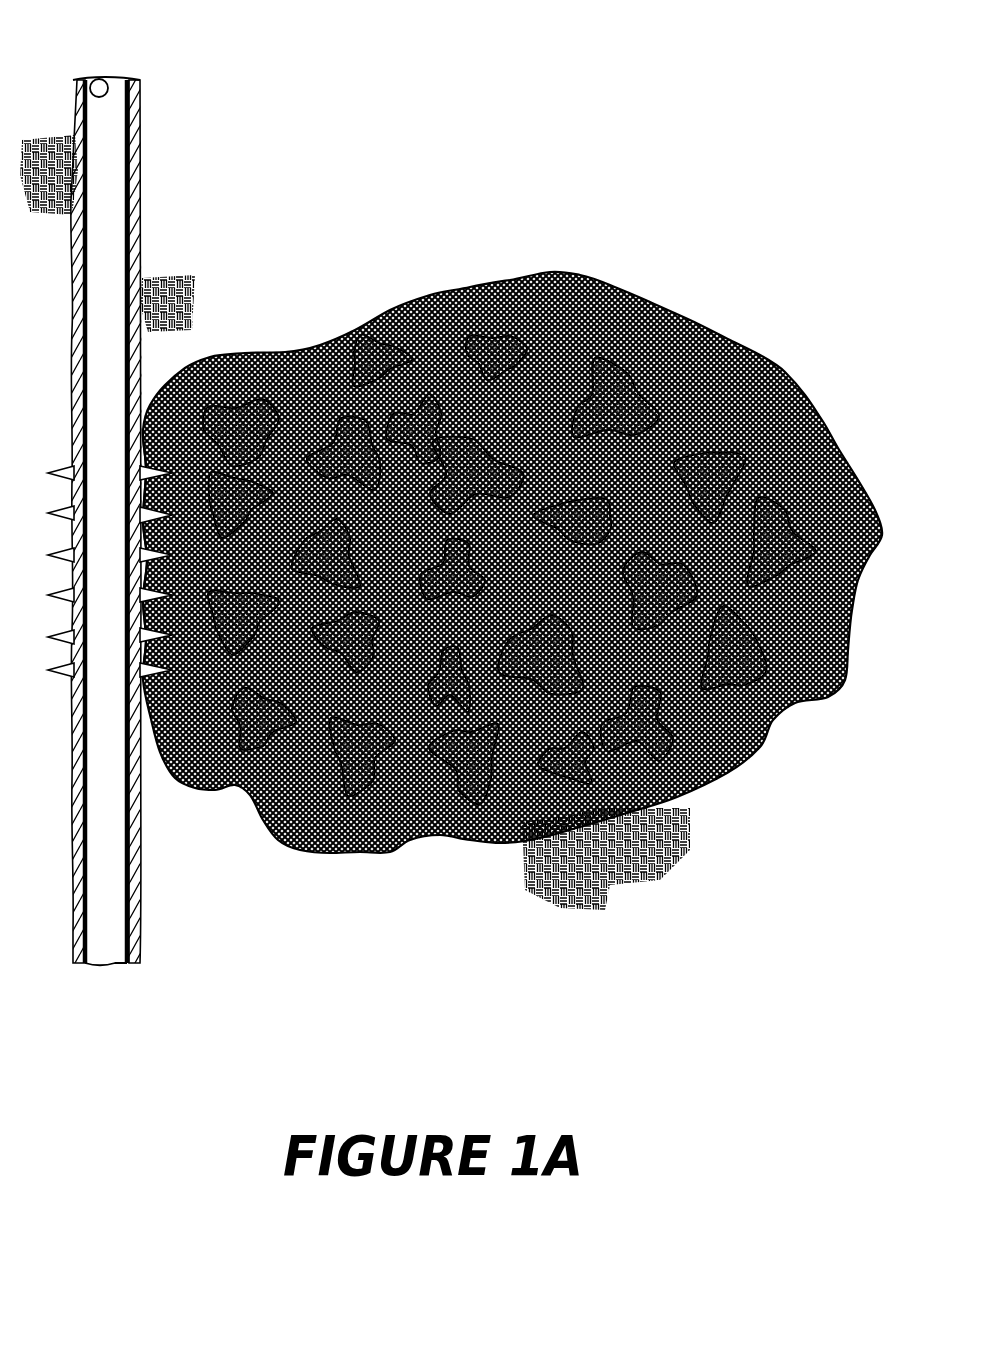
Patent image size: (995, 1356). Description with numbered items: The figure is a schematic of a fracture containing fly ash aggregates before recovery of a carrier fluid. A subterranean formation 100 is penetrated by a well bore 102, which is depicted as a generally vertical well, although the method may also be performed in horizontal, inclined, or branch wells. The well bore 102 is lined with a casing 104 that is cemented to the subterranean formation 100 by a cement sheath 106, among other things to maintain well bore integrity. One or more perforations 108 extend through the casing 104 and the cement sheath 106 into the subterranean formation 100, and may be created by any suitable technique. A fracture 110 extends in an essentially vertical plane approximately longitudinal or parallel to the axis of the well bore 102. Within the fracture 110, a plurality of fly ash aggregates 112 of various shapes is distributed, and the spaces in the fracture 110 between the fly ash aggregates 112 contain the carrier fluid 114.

The subterranean formation 100 is at (489, 223).
The well bore 102 is at (141, 222).
The casing 104 is at (106, 78).
The cement sheath 106 is at (143, 906).
The perforations 108 is at (142, 680).
The fracture 110 is at (745, 368).
The plurality of fly ash aggregates 112 is at (636, 385).
The carrier fluid 114 is at (600, 290).